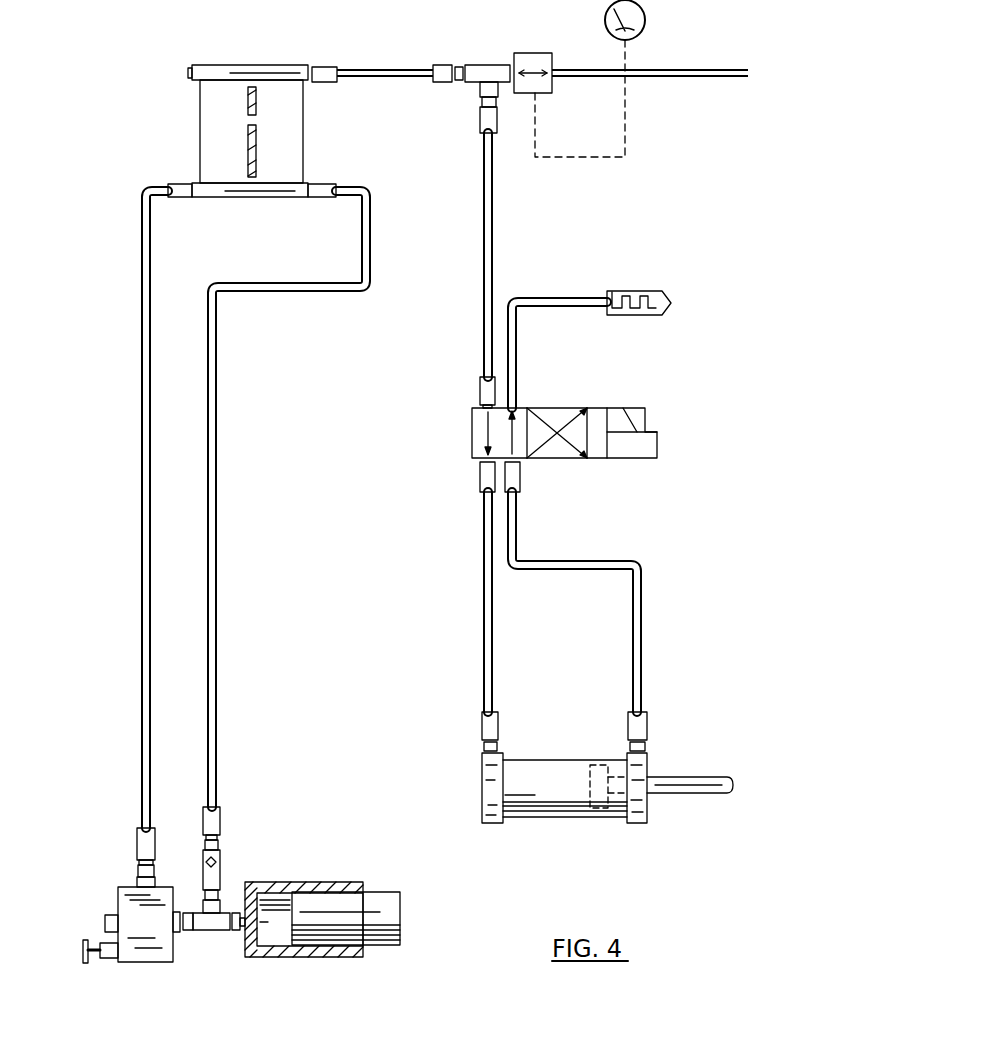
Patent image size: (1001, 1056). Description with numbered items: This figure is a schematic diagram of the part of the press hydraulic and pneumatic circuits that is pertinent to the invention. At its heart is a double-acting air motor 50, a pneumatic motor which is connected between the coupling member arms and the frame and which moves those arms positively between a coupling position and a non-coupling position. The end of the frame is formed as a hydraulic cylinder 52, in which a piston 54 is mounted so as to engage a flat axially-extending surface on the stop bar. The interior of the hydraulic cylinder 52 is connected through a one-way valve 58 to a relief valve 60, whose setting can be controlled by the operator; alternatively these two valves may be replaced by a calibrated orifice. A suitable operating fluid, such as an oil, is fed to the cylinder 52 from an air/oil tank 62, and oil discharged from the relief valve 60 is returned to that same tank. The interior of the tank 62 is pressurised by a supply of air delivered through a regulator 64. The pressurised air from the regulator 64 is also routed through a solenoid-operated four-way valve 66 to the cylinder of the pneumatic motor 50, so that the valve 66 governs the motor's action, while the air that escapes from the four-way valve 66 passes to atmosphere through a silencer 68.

The double-acting air motor 50 is at (557, 770).
The hydraulic cylinder 52 is at (333, 881).
The piston 54 is at (389, 894).
The one-way valve 58 is at (218, 857).
The relief valve 60 is at (165, 945).
The air/oil tank 62 is at (303, 131).
The regulator 64 is at (544, 90).
The solenoid-operated four-way valve 66 is at (560, 458).
The silencer 68 is at (634, 316).